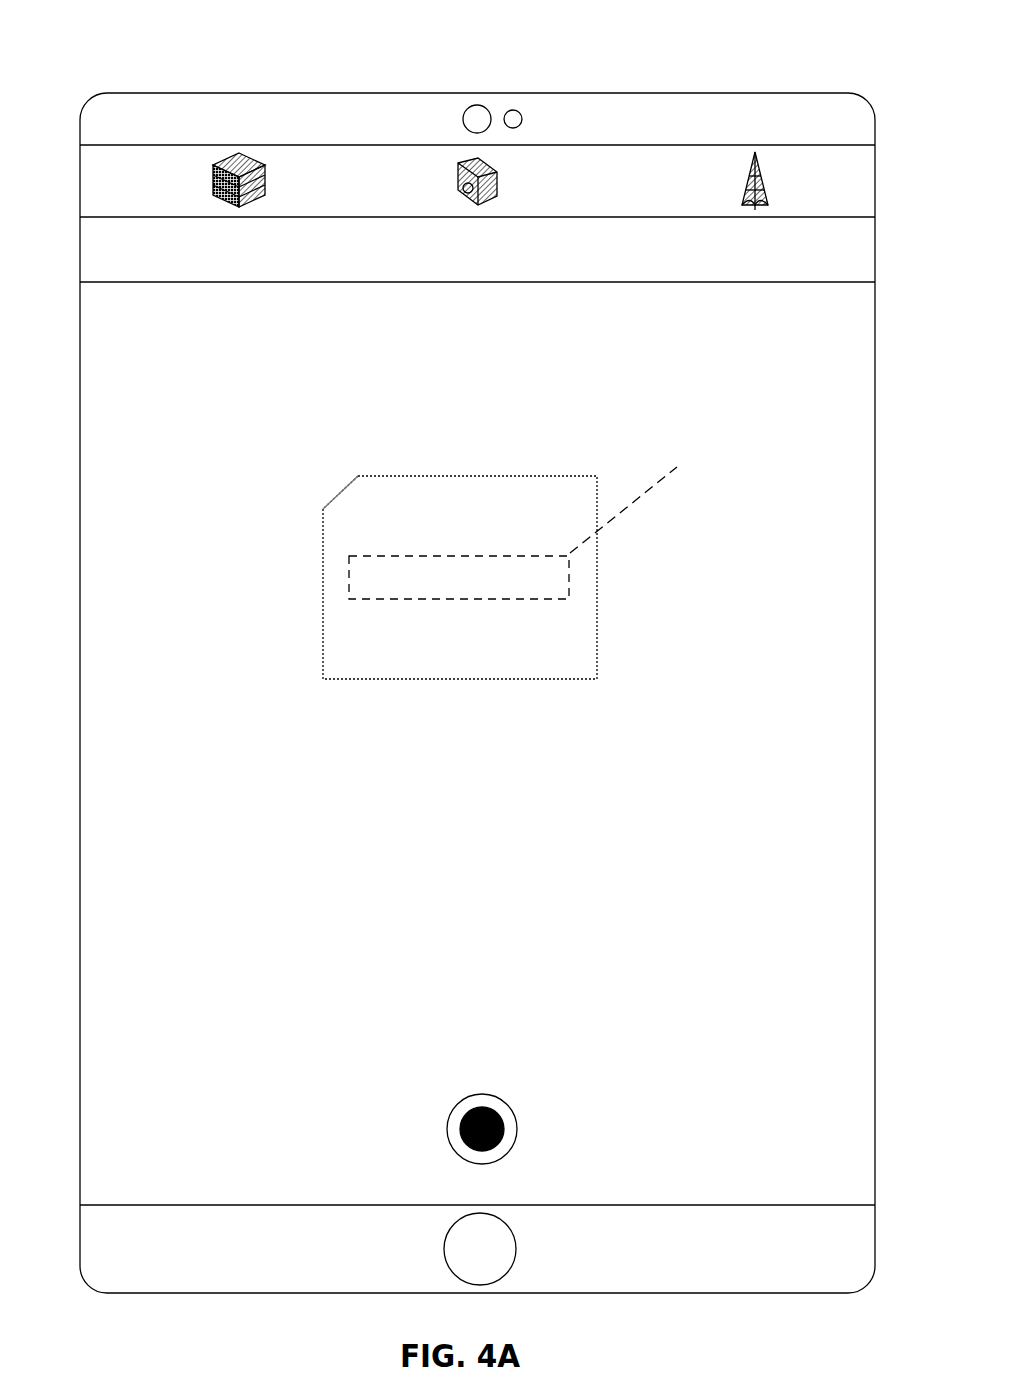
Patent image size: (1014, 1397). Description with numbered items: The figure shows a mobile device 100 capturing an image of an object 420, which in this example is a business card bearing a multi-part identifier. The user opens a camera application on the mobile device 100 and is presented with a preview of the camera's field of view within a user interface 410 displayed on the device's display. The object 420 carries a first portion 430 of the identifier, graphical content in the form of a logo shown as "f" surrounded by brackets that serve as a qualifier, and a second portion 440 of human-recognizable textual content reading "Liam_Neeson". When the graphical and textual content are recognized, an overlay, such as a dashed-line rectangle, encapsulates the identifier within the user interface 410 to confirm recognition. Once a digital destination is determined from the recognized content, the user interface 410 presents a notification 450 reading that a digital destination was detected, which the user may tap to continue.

The mobile device 100 is at (158, 93).
The user interface 410 is at (130, 362).
The object 420 is at (323, 679).
The first portion 430 is at (362, 568).
The second portion 440 is at (453, 557).
The notification 450 is at (782, 466).